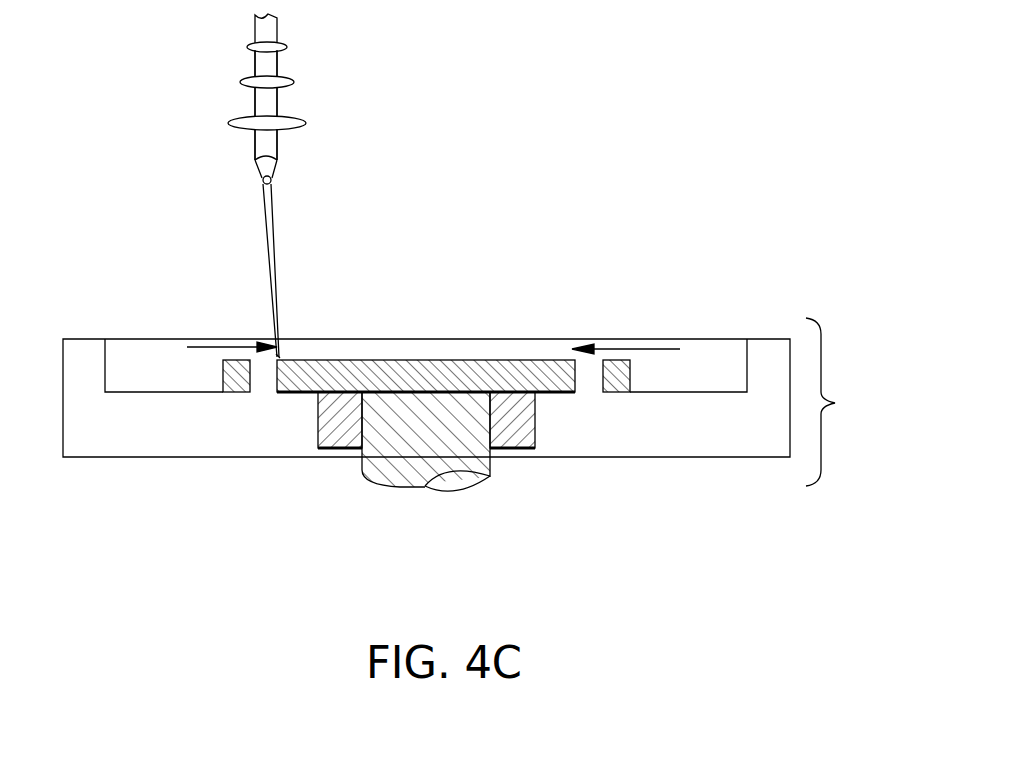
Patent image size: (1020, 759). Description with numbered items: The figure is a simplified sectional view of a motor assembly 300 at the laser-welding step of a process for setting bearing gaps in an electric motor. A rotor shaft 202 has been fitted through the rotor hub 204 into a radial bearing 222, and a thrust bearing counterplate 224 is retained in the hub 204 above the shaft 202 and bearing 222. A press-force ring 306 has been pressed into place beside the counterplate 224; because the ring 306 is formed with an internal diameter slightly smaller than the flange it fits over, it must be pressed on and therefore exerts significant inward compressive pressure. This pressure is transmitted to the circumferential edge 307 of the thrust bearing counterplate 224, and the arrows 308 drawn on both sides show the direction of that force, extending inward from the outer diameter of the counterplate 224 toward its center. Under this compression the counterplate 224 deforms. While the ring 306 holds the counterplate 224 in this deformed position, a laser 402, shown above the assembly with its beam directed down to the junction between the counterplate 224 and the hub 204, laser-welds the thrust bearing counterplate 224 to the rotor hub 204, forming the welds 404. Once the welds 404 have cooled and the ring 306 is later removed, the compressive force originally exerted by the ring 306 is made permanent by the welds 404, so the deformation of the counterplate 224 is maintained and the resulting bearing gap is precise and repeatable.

The rotor shaft 202 is at (460, 483).
The rotor hub 204 is at (755, 438).
The radial bearing 222 is at (330, 448).
The thrust bearing counterplate 224 is at (425, 358).
The motor assembly 300 is at (479, 455).
The press-force ring 306 is at (630, 372).
The circumferential edge 307 is at (585, 440).
The arrows 308 is at (222, 346).
The laser 402 is at (277, 148).
The welds 404 is at (283, 357).